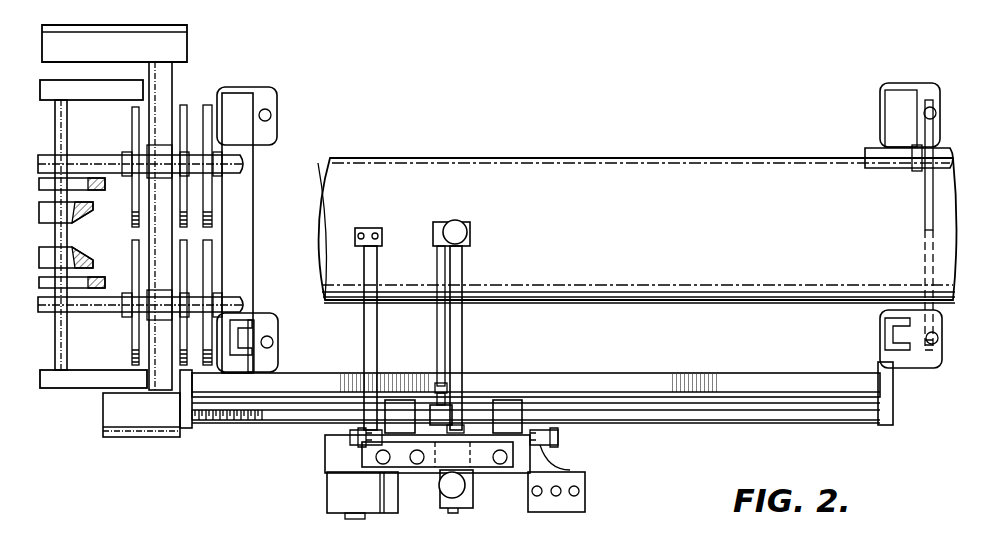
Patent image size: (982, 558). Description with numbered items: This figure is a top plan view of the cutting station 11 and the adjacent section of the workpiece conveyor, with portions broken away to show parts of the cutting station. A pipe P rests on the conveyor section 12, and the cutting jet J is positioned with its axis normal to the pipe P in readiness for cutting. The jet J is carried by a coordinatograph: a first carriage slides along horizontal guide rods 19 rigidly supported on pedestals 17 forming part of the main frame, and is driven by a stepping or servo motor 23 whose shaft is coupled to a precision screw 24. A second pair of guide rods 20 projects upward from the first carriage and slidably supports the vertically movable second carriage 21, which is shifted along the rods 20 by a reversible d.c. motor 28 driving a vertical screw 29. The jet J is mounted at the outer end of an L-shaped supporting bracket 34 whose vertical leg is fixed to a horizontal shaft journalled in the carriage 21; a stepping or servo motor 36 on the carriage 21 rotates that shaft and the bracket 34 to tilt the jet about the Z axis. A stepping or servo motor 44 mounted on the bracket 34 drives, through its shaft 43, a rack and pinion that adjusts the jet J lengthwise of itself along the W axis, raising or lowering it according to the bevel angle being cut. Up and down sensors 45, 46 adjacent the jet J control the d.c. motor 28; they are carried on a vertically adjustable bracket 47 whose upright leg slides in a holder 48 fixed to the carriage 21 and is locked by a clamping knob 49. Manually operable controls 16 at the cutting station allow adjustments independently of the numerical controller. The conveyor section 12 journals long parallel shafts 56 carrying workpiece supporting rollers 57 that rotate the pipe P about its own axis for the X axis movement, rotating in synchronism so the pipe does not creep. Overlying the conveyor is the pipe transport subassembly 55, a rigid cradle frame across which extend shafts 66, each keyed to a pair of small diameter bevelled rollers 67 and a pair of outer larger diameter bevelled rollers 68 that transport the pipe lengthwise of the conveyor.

The cutting station 11 is at (608, 122).
The pipe P is at (630, 158).
The cutting jet J is at (460, 222).
The conveyor section 12 is at (178, 26).
The manually operable controls 16 is at (585, 497).
The pedestal 17 is at (265, 352).
The horizontal guide rod 19 is at (652, 422).
The guide rod 20 is at (417, 465).
The second carriage 21 is at (470, 435).
The motor 23 is at (158, 438).
The precision screw 24 is at (222, 420).
The reversible d.c. motor 28 is at (338, 498).
The vertical screw 29 is at (376, 459).
The L-shaped supporting bracket 34 is at (462, 330).
The motor 36 is at (445, 500).
The shaft 43 is at (440, 330).
The motor 44 is at (432, 408).
The up sensor 45 is at (362, 230).
The down sensor 46 is at (377, 233).
The vertically adjustable bracket 47 is at (378, 272).
The holder 48 is at (552, 445).
The clamping knob 49 is at (350, 438).
The pipe transport subassembly 55 is at (70, 80).
The shaft 56 is at (83, 162).
The workpiece supporting roller 57 is at (183, 107).
The shaft 66 is at (67, 352).
The small diameter bevelled roller 67 is at (75, 215).
The larger diameter bevelled roller 68 is at (105, 186).